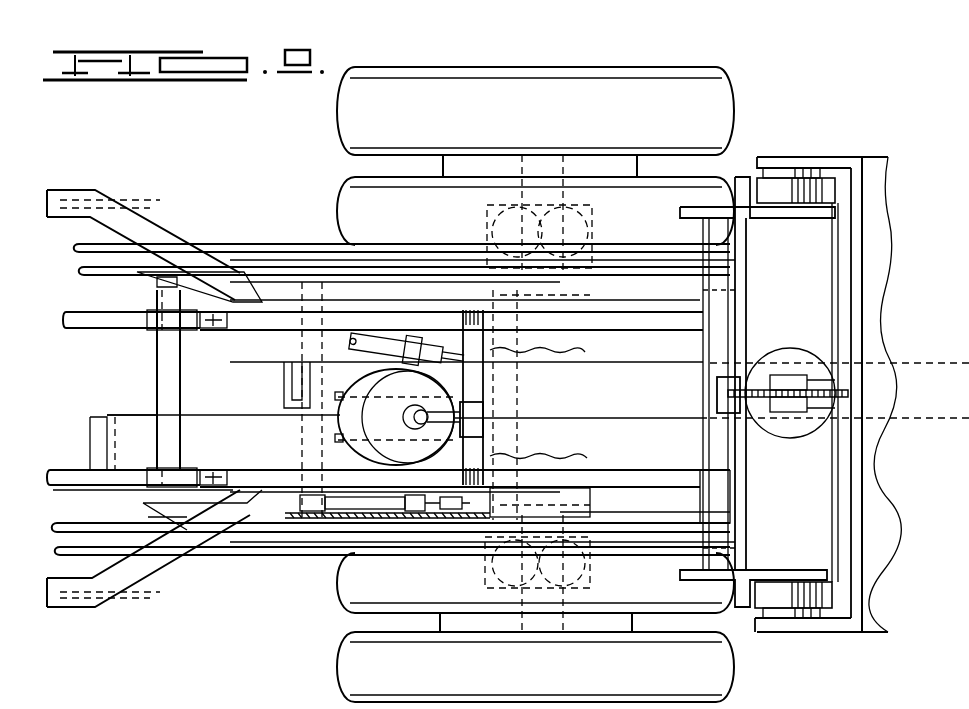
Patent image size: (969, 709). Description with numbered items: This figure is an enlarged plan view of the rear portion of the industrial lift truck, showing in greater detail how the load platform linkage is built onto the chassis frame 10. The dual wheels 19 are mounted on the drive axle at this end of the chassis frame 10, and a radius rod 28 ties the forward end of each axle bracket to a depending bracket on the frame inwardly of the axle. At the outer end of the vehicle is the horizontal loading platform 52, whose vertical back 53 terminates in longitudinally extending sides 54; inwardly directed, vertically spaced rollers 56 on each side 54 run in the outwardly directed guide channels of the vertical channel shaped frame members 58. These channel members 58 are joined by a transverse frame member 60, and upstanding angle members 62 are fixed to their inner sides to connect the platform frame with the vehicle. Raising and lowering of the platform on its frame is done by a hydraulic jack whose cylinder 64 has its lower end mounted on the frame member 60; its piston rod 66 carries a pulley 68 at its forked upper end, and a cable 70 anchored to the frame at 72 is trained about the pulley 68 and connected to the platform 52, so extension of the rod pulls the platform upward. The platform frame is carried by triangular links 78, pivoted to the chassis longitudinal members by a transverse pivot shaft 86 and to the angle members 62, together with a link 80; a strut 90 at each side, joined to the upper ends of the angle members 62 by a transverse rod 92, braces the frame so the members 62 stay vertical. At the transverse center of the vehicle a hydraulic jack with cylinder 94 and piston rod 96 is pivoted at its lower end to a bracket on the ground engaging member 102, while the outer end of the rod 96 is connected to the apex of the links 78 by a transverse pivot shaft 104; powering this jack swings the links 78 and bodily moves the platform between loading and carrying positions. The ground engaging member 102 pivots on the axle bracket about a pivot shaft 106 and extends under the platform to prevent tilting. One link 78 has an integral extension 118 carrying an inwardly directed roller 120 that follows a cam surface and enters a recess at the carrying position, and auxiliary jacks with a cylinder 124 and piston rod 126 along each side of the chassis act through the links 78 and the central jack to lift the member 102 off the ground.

The chassis frame 10 is at (130, 196).
The dual wheels 19 is at (352, 130).
The radius rod 28 is at (412, 502).
The loading platform 52 is at (868, 157).
The vertical back 53 is at (851, 282).
The sides 54 is at (790, 157).
The rollers 56 is at (800, 203).
The channel shaped frame members 58 is at (790, 218).
The transverse frame member 60 is at (838, 318).
The upstanding angle members 62 is at (690, 210).
The cylinder 64 is at (776, 352).
The piston rod 66 is at (800, 375).
The pulley 68 is at (790, 438).
The cable 70 is at (830, 440).
The cable anchorage 72 is at (717, 400).
The links 78 is at (285, 325).
The link 80 is at (222, 247).
The pivot shaft 86 is at (156, 370).
The strut 90 is at (273, 268).
The transverse rod 92 is at (735, 372).
The cylinder 94 is at (355, 430).
The piston rod 96 is at (418, 406).
The ground engaging member 102 is at (200, 415).
The pivot shaft 104 is at (484, 372).
The pivot shaft 106 is at (284, 370).
The extension 118 is at (108, 490).
The roller 120 is at (95, 417).
The cylinder 124 is at (141, 699).
The piston rod 126 is at (88, 328).